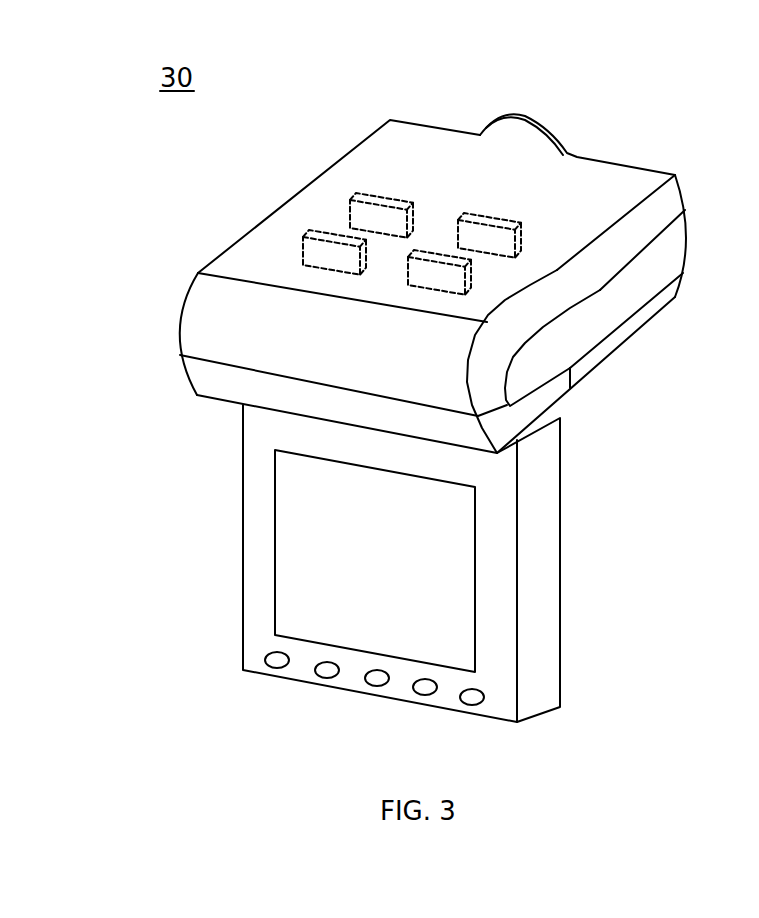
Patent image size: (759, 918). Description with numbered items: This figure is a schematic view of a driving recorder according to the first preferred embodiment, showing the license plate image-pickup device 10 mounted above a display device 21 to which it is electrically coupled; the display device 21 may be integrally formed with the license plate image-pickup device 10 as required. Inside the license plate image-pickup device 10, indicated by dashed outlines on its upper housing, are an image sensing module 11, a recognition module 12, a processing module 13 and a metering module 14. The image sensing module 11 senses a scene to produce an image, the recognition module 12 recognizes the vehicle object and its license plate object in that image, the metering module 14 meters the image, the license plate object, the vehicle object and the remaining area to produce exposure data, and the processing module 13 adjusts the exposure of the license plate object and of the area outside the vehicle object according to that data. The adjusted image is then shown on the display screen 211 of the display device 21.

The license plate image-pickup device 10 is at (542, 97).
The image sensing module 11 is at (365, 218).
The recognition module 12 is at (323, 253).
The processing module 13 is at (507, 243).
The metering module 14 is at (458, 278).
The display device 21 is at (537, 583).
The display screen 211 is at (315, 565).